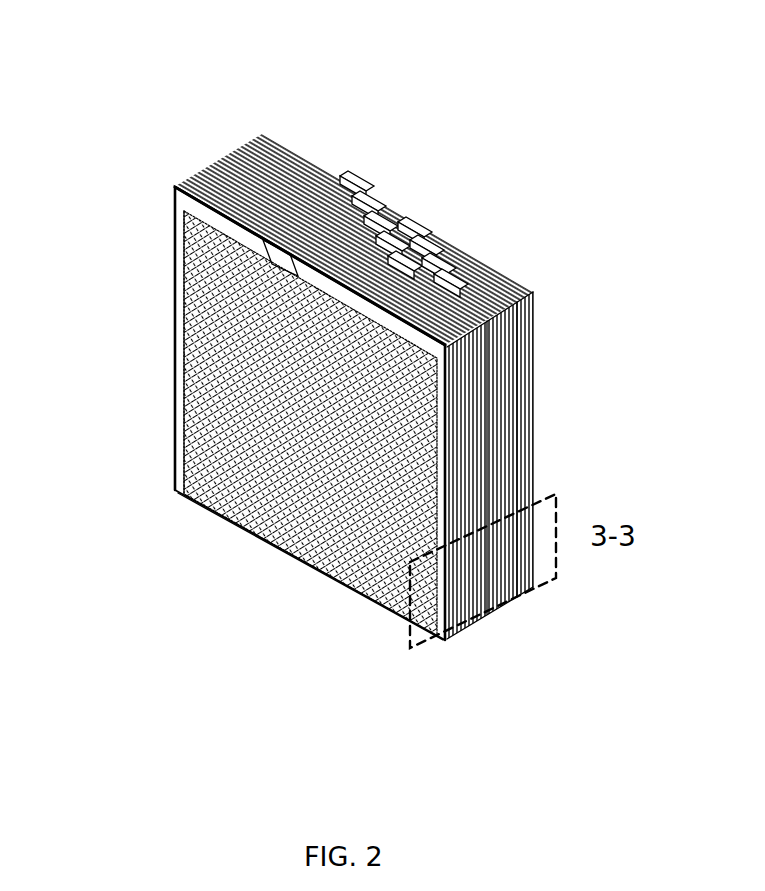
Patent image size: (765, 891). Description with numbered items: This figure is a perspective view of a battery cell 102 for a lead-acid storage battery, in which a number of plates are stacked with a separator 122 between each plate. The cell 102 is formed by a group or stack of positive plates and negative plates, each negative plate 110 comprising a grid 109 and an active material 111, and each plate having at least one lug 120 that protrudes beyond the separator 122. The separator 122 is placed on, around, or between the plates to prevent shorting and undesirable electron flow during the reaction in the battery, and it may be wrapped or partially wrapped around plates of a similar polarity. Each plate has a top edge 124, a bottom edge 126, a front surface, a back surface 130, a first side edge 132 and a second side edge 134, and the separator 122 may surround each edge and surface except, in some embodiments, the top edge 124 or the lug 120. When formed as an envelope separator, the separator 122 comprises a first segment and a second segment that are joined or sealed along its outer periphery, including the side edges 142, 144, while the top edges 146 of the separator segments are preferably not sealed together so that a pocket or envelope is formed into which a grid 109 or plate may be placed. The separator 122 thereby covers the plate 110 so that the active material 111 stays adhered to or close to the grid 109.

The cell 102 is at (346, 366).
The grid 109 is at (455, 248).
The negative plate 110 is at (334, 505).
The active material 111 is at (205, 413).
The lug 120 is at (355, 172).
The separator 122 is at (486, 278).
The top edge 124 is at (202, 220).
The bottom edge 126 is at (262, 540).
The back surface 130 is at (228, 376).
The first side edge 132 is at (183, 368).
The second side edge 134 is at (536, 414).
The side edge of separator 142 is at (173, 237).
The side edge of separator 144 is at (447, 383).
The top edges of separator segments 146 is at (227, 216).